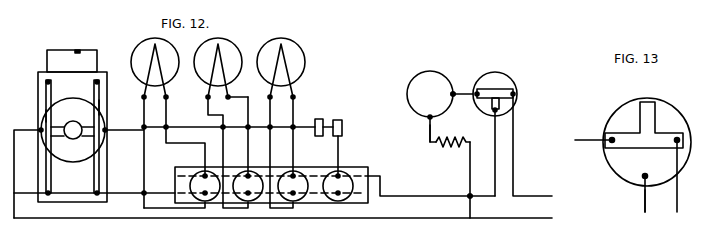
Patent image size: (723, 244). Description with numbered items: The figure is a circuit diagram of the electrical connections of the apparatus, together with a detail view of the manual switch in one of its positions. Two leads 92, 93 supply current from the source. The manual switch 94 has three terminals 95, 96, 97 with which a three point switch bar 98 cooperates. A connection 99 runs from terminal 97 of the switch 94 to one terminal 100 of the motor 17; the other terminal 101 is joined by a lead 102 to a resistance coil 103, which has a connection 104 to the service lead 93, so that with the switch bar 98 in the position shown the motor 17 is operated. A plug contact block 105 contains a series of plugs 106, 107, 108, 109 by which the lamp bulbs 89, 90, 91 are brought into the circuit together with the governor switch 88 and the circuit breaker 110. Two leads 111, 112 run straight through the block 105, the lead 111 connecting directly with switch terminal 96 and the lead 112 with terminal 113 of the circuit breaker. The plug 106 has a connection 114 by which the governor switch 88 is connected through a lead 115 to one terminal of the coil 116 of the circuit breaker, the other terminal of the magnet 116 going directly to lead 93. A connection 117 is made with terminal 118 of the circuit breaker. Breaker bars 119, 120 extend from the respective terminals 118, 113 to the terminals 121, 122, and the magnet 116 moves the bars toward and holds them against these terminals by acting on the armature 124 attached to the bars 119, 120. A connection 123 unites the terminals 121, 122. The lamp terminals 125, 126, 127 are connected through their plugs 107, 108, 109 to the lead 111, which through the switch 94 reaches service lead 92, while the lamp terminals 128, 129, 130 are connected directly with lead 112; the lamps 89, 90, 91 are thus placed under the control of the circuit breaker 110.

In FIG. 12, the motor 17 is at (428, 80).
In FIG. 12, the governor switch 88 is at (338, 119).
In FIG. 12, the lamp 89 is at (155, 68).
In FIG. 12, the lamp 90 is at (221, 68).
In FIG. 12, the lamp 91 is at (281, 68).
In FIG. 12, the lead 92 is at (527, 196).
In FIG. 13, the lead 92 is at (678, 194).
In FIG. 12, the lead 93 is at (535, 218).
In FIG. 12, the manual switch 94 is at (518, 95).
In FIG. 13, the manual switch 94 is at (668, 102).
In FIG. 12, the terminal 95 is at (511, 91).
In FIG. 13, the terminal 95 is at (680, 131).
In FIG. 12, the terminal 96 is at (500, 110).
In FIG. 13, the terminal 96 is at (643, 178).
In FIG. 12, the terminal 97 is at (477, 88).
In FIG. 13, the terminal 97 is at (612, 131).
In FIG. 12, the three point switch bar 98 is at (497, 90).
In FIG. 13, the three point switch bar 98 is at (648, 100).
In FIG. 12, the connection 99 is at (455, 93).
In FIG. 13, the connection 99 is at (582, 140).
In FIG. 12, the motor terminal 100 is at (455, 96).
In FIG. 12, the motor terminal 101 is at (428, 118).
In FIG. 12, the lead 102 is at (432, 126).
In FIG. 12, the resistance coil 103 is at (466, 150).
In FIG. 12, the connection 104 is at (470, 174).
In FIG. 12, the plug contact block 105 is at (358, 168).
In FIG. 12, the plug 106 is at (338, 186).
In FIG. 12, the plug 107 is at (293, 186).
In FIG. 12, the plug 108 is at (248, 186).
In FIG. 12, the plug 109 is at (205, 186).
In FIG. 12, the circuit breaker 110 is at (73, 73).
In FIG. 12, the lead 111 is at (384, 196).
In FIG. 13, the lead 111 is at (646, 198).
In FIG. 12, the lead 112 is at (128, 194).
In FIG. 12, the circuit breaker terminal 113 is at (99, 196).
In FIG. 12, the connection 114 is at (340, 158).
In FIG. 12, the lead 115 is at (314, 124).
In FIG. 12, the coil 116 is at (64, 100).
In FIG. 12, the connection 117 is at (38, 193).
In FIG. 12, the circuit breaker terminal 118 is at (52, 196).
In FIG. 12, the breaker bar 119 is at (46, 117).
In FIG. 12, the breaker bar 120 is at (99, 102).
In FIG. 12, the circuit breaker terminal 121 is at (46, 78).
In FIG. 12, the circuit breaker terminal 122 is at (98, 80).
In FIG. 12, the connection 123 is at (88, 36).
In FIG. 12, the armature 124 is at (76, 124).
In FIG. 12, the lamp terminal 125 is at (200, 153).
In FIG. 12, the lamp terminal 126 is at (248, 157).
In FIG. 12, the lamp terminal 127 is at (293, 157).
In FIG. 12, the lamp terminal 128 is at (144, 117).
In FIG. 12, the lamp terminal 129 is at (208, 113).
In FIG. 12, the lamp terminal 130 is at (270, 102).